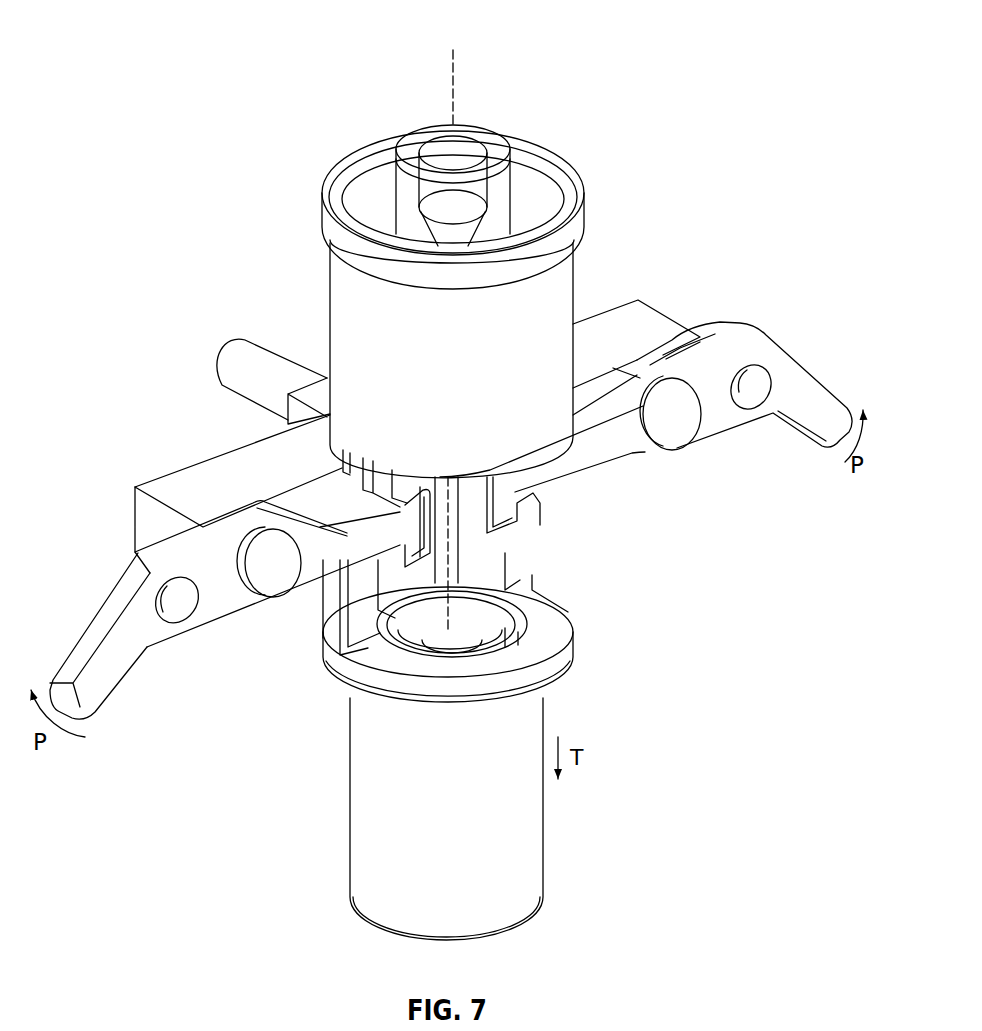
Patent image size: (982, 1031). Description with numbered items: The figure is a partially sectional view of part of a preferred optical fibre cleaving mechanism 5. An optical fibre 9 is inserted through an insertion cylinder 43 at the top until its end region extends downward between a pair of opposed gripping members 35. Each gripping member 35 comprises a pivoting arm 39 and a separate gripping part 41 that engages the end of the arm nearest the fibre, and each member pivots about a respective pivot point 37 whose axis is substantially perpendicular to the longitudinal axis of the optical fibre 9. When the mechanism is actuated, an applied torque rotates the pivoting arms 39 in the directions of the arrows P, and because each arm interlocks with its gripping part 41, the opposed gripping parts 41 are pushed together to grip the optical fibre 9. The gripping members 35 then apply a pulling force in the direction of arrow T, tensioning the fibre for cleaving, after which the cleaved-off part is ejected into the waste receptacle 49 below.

The optical fibre cleaving mechanism 5 is at (274, 88).
The optical fibre 9 is at (455, 93).
The gripping members 35 is at (209, 632).
The pivot points 37 is at (267, 584).
The pivoting arm 39 is at (97, 627).
The gripping part 41 is at (358, 586).
The insertion cylinder 43 is at (498, 135).
The waste receptacle 49 is at (527, 873).